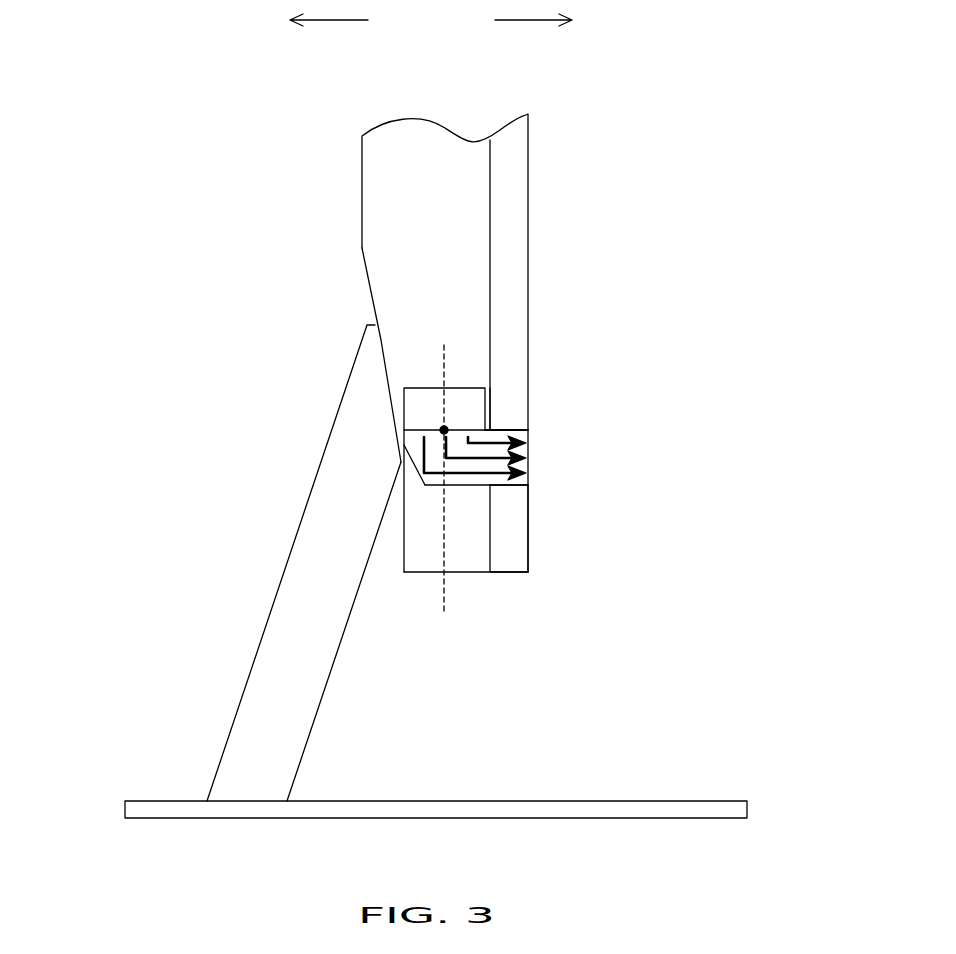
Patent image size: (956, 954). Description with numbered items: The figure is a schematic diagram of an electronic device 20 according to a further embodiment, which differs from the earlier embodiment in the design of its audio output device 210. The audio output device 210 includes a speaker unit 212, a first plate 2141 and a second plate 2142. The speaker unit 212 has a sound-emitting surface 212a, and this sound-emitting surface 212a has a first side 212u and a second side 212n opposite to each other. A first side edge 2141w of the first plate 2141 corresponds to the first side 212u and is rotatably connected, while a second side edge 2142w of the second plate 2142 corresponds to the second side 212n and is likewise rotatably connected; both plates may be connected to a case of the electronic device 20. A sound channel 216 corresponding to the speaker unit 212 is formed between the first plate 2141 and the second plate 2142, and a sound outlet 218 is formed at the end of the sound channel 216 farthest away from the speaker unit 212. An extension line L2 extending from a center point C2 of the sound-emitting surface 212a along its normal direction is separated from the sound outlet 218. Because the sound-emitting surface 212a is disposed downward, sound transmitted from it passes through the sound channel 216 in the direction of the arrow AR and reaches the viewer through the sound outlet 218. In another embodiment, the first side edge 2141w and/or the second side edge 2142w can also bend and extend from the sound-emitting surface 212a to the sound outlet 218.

The electronic device 20 is at (413, 191).
The audio output device 210 is at (428, 400).
The speaker unit 212 is at (365, 450).
The sound-emitting surface 212a is at (418, 436).
The second side 212n is at (297, 21).
The first side 212u is at (567, 21).
The first plate 2141 is at (520, 427).
The first side edge 2141w is at (489, 425).
The second plate 2142 is at (522, 488).
The second side edge 2142w is at (488, 491).
The sound channel 216 is at (463, 478).
The sound outlet 218 is at (534, 431).
The arrow AR is at (481, 443).
The center point C2 is at (444, 430).
The extension line L2 is at (443, 493).